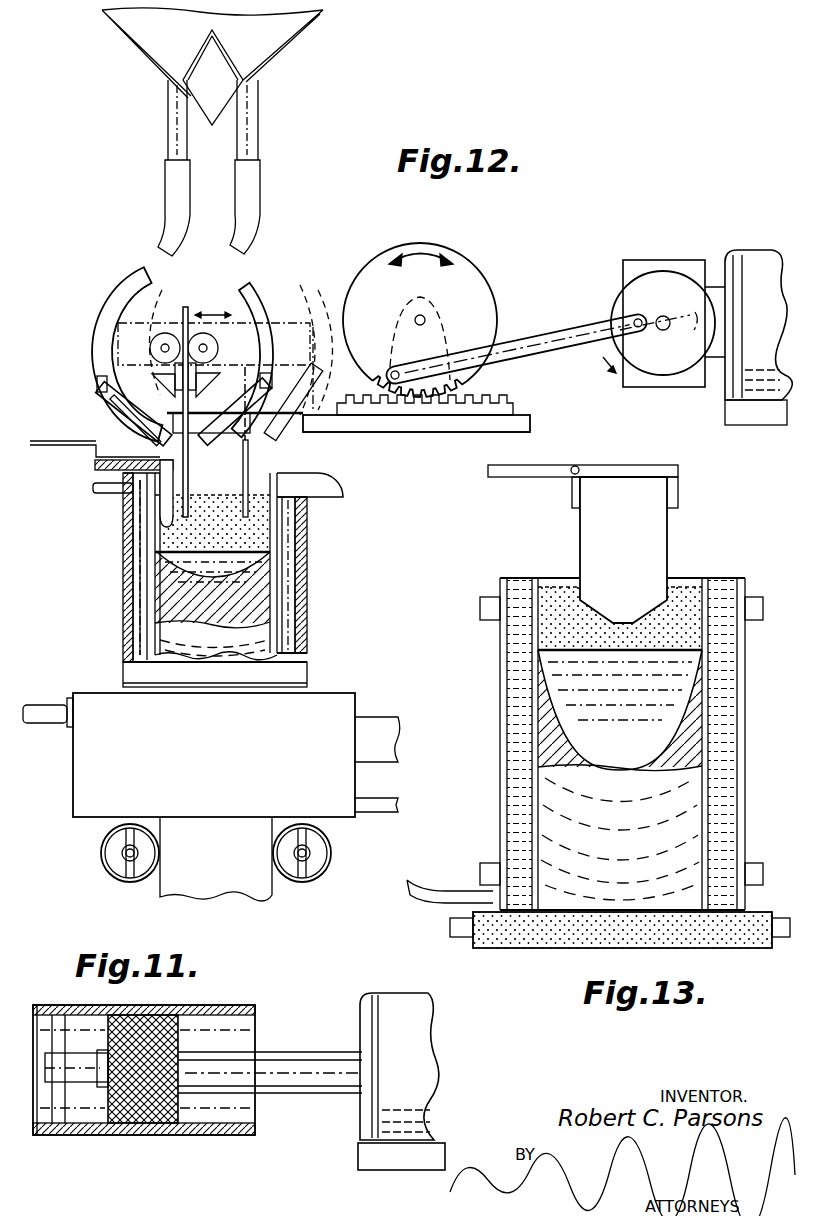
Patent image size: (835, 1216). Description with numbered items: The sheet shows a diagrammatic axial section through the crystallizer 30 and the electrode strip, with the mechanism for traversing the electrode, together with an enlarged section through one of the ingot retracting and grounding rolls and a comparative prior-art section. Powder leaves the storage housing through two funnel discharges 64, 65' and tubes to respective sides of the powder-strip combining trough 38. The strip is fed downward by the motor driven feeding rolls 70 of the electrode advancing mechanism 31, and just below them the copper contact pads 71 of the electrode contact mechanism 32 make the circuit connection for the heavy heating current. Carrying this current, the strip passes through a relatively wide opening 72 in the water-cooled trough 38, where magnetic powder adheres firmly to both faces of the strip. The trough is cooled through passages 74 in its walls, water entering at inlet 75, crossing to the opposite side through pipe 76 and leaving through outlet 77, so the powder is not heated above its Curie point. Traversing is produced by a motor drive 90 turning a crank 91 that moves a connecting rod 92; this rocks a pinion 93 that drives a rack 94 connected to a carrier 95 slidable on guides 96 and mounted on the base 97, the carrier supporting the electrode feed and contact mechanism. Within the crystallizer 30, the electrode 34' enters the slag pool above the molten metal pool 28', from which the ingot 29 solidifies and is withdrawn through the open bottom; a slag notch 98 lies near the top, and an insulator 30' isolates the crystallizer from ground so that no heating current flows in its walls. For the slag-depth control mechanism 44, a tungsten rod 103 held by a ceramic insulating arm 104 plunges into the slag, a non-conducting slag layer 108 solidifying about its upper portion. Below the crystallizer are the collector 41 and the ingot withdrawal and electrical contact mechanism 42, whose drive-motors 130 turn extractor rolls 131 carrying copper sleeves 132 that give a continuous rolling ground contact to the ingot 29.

In FIG. 12, the funnel discharge 64 is at (130, 45).
In FIG. 12, the funnel discharge 65' is at (261, 67).
In FIG. 12, the plunger rod 34' is at (207, 393).
In FIG. 13, the plunger rod 34' is at (604, 544).
In FIG. 12, the electrode advancing mechanism 31 is at (148, 325).
In FIG. 12, the outlet 77 is at (281, 307).
In FIG. 12, the strip motor driven feeding rolls 70 is at (150, 350).
In FIG. 12, the carrier 95 is at (285, 375).
In FIG. 12, the copper electrical contact pads 71 is at (175, 374).
In FIG. 12, the electrode contact mechanism 32 is at (197, 374).
In FIG. 12, the inlet 75 is at (97, 384).
In FIG. 12, the powder-strip combining trough 38 is at (120, 397).
In FIG. 12, the pipe 76 is at (159, 395).
In FIG. 12, the passages 74 is at (127, 417).
In FIG. 12, the mechanism to control the depth of the slag 44 is at (150, 437).
In FIG. 12, the ceramic insulating arm 104 is at (97, 463).
In FIG. 12, the opening 72 is at (195, 437).
In FIG. 12, the non-conducting slag layer 108 is at (262, 500).
In FIG. 13, the non-conducting slag layer 108 is at (680, 603).
In FIG. 12, the slag notch 98 is at (320, 475).
In FIG. 12, the tungsten metal rod 103 is at (155, 532).
In FIG. 12, the crystallizer 30 is at (221, 567).
In FIG. 13, the crystallizer 30 is at (598, 763).
In FIG. 12, the molten metal pool 28' is at (175, 564).
In FIG. 13, the molten metal pool 28' is at (620, 710).
In FIG. 12, the insulator 30' is at (240, 659).
In FIG. 12, the vapor, water and flux collector 41 is at (327, 697).
In FIG. 12, the ingot withdrawal and electrical contact mechanism 42 is at (211, 791).
In FIG. 12, the copper sleeves 132 is at (110, 877).
In FIG. 11, the copper sleeves 132 is at (227, 1020).
In FIG. 12, the ingot 29 is at (218, 867).
In FIG. 13, the ingot 29 is at (620, 839).
In FIG. 12, the pinion 93 is at (482, 297).
In FIG. 12, the connecting rod 92 is at (552, 331).
In FIG. 12, the guides 96 is at (510, 413).
In FIG. 12, the rack 94 is at (433, 407).
In FIG. 12, the base 97 is at (523, 433).
In FIG. 12, the crank 91 is at (652, 278).
In FIG. 12, the motor drive 90 is at (753, 262).
In FIG. 11, the extractor rolls 131 is at (150, 1018).
In FIG. 11, the drive-motors 130 is at (400, 998).